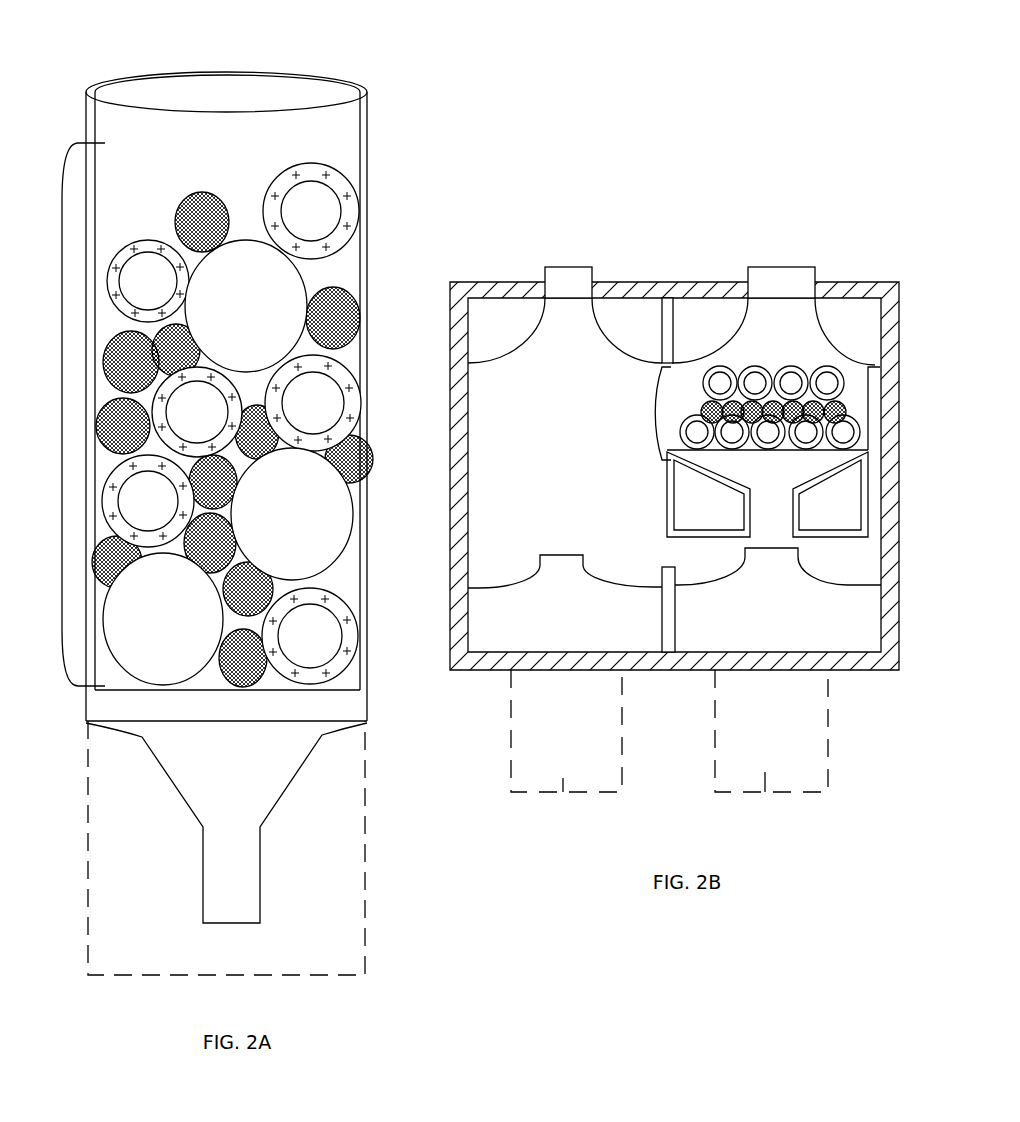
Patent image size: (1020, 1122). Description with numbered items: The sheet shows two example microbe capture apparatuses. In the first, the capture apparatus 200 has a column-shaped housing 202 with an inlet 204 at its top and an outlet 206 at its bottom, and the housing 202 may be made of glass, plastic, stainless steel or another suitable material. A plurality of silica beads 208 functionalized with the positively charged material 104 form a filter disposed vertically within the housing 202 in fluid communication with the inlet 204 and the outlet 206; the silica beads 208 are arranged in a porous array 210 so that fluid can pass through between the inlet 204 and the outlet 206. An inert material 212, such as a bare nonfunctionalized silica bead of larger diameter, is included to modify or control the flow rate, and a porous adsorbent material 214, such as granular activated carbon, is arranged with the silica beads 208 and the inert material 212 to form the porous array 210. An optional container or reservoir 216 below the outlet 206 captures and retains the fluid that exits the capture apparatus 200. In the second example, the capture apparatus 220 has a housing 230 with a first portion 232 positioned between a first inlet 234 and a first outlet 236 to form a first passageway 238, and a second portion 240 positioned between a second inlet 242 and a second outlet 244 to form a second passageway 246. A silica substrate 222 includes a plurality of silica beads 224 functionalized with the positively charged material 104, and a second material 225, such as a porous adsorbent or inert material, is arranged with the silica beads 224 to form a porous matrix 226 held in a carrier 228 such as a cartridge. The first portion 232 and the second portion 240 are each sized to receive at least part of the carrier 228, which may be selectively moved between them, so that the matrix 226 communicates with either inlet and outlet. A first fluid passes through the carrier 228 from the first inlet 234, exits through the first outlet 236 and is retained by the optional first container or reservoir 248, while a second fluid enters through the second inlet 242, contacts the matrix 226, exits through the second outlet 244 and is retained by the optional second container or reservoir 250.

In FIG. 2A, the microbe capture apparatus 200 is at (276, 494).
In FIG. 2A, the housing 202 is at (368, 147).
In FIG. 2A, the inlet 204 is at (268, 97).
In FIG. 2A, the outlet 206 is at (237, 923).
In FIG. 2A, the silica beads 208 is at (280, 433).
In FIG. 2A, the porous array 210 is at (62, 414).
In FIG. 2A, the inert material 212 is at (277, 285).
In FIG. 2A, the porous adsorbent material 214 is at (200, 212).
In FIG. 2A, the container or reservoir 216 is at (368, 903).
In FIG. 2A, the positively charged material 104 is at (348, 202).
In FIG. 2B, the positively charged material 104 is at (823, 380).
In FIG. 2B, the capture apparatus 220 is at (674, 401).
In FIG. 2B, the silica substrate 222 is at (847, 360).
In FIG. 2B, the silica beads 224 is at (770, 402).
In FIG. 2B, the second material 225 is at (845, 403).
In FIG. 2B, the porous matrix 226 is at (644, 413).
In FIG. 2B, the carrier 228 is at (667, 465).
In FIG. 2B, the housing 230 is at (623, 280).
In FIG. 2B, the first portion 232 is at (690, 333).
In FIG. 2B, the first inlet 234 is at (775, 267).
In FIG. 2B, the first outlet 236 is at (763, 549).
In FIG. 2B, the first passageway 238 is at (830, 566).
In FIG. 2B, the second portion 240 is at (517, 483).
In FIG. 2B, the second inlet 242 is at (565, 267).
In FIG. 2B, the second outlet 244 is at (560, 550).
In FIG. 2B, the second passageway 246 is at (496, 421).
In FIG. 2B, the first container or reservoir 248 is at (768, 802).
In FIG. 2B, the second container or reservoir 250 is at (567, 804).